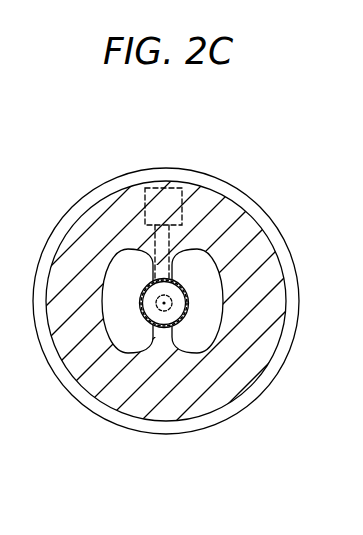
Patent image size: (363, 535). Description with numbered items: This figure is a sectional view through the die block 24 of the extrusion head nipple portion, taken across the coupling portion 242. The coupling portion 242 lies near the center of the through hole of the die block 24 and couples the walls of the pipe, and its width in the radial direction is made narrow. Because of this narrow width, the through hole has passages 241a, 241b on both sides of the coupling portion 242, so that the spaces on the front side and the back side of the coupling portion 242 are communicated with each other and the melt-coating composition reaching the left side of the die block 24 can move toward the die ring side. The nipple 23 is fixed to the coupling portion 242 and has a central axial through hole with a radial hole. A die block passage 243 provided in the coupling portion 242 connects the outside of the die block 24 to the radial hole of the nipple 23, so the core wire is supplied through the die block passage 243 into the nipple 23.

The nipple 23 is at (176, 303).
The die block 24 is at (236, 400).
The passage 241a is at (132, 341).
The passage 241b is at (193, 343).
The coupling portion 242 is at (200, 250).
The die block passage 243 is at (205, 186).